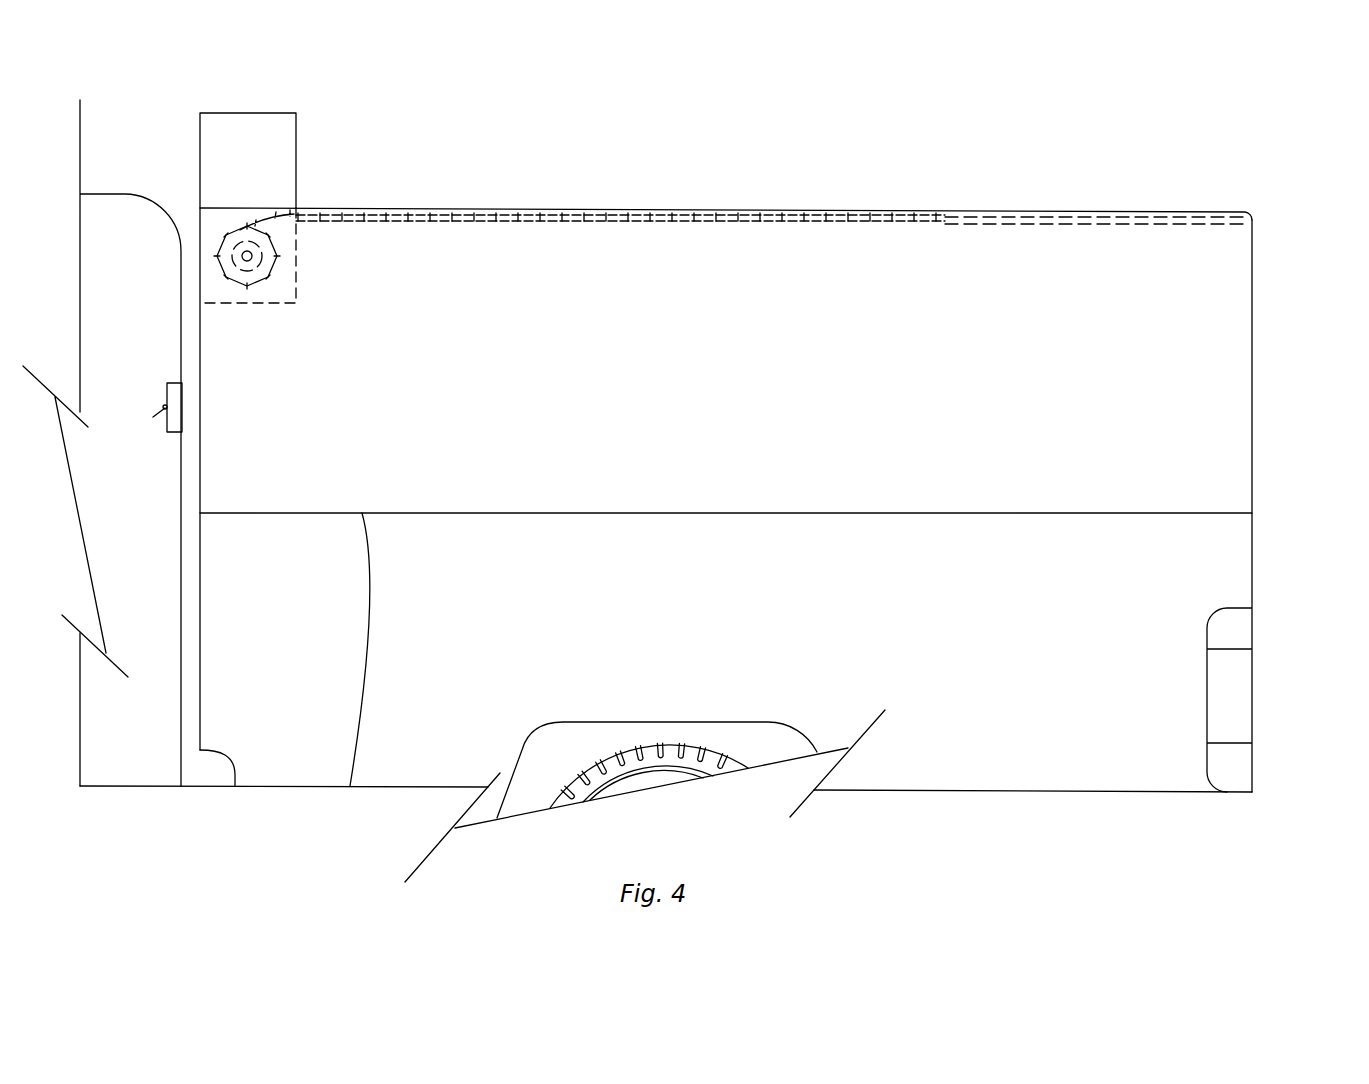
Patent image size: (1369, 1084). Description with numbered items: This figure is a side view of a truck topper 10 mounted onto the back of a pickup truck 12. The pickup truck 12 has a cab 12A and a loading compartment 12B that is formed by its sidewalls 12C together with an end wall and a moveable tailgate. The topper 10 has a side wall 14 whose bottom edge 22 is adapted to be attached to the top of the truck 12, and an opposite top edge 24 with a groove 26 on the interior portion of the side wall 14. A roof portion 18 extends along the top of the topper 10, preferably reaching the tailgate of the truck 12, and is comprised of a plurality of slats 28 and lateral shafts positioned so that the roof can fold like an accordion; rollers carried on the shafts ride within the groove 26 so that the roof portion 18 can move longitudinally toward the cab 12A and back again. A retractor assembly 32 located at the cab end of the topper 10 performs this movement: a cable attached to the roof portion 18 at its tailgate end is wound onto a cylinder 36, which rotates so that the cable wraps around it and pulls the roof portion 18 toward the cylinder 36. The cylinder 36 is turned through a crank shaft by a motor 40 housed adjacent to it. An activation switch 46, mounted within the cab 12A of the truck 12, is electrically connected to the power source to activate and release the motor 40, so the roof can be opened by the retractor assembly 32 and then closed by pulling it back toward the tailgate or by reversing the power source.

The truck topper 10 is at (715, 177).
The pickup truck 12 is at (1046, 745).
The cab 12A is at (100, 193).
The loading compartment 12B is at (235, 786).
The sidewalls 12C is at (658, 643).
The side wall 14 is at (736, 364).
The roof portion 18 is at (773, 212).
The bottom edge 22 is at (350, 786).
The top edge 24 is at (415, 208).
The groove 26 is at (493, 210).
The slats 28 is at (624, 211).
The retractor assembly 32 is at (296, 208).
The cylinder 36 is at (240, 235).
The motor 40 is at (222, 135).
The activation switch 46 is at (167, 392).